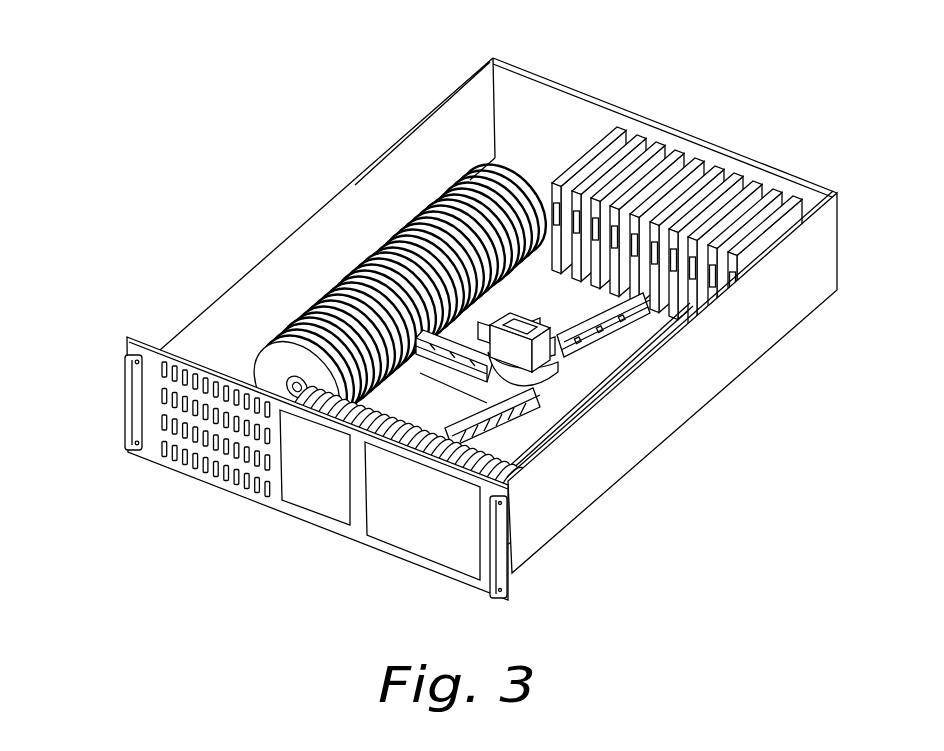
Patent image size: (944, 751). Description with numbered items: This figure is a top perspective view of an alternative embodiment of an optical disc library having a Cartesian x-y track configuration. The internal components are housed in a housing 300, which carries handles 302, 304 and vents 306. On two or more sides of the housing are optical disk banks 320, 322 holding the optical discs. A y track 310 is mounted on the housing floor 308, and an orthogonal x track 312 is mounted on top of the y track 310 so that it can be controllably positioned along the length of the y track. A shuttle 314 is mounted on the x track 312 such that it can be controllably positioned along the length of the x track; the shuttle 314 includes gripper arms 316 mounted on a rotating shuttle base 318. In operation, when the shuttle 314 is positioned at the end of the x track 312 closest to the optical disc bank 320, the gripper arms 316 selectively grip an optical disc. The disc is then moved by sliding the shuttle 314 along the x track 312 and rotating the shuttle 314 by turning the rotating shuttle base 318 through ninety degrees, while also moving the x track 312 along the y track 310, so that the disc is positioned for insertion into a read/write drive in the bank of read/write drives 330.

The housing 300 is at (258, 263).
The handle 302 is at (309, 471).
The handle 304 is at (125, 423).
The vents 306 is at (176, 453).
The housing floor 308 is at (592, 393).
The y track 310 is at (612, 348).
The x track 312 is at (567, 418).
The shuttle 314 is at (535, 318).
The gripper arms 316 is at (483, 321).
The rotating shuttle base 318 is at (502, 386).
The optical disk bank 320 is at (440, 197).
The optical disk bank 322 is at (377, 418).
The bank of read/write drives 330 is at (617, 132).